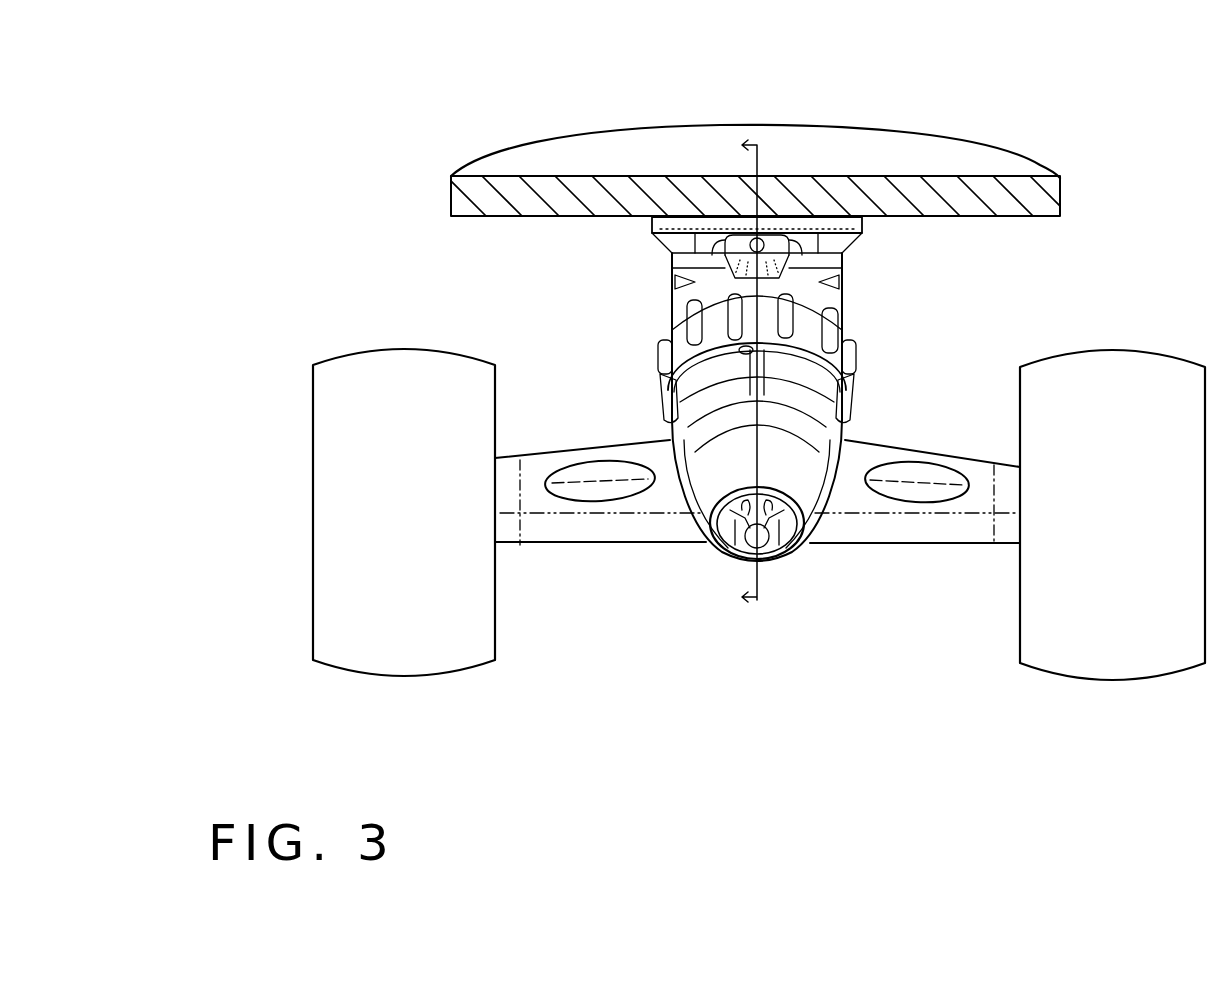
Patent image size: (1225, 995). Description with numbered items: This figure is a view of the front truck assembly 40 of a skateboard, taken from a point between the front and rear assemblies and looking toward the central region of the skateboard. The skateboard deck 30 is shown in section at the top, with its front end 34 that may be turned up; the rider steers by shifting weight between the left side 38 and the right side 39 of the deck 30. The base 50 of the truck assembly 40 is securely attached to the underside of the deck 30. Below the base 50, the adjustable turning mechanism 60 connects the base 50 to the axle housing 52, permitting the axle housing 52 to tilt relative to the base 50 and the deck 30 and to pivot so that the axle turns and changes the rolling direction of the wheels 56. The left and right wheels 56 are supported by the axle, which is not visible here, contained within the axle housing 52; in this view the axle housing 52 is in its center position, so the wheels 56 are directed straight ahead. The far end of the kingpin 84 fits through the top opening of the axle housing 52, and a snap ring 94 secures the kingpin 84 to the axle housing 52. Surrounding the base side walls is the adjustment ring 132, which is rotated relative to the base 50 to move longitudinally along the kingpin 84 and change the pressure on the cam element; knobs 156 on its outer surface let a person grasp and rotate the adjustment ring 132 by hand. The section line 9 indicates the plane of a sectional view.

The section line 9- 9 is at (758, 383).
The skateboard deck 30 is at (797, 157).
The front end of the deck 34 is at (1032, 163).
The left side of the skateboard deck 38 is at (615, 154).
The right side of the skateboard deck 39 is at (983, 165).
The front truck assembly 40 is at (572, 278).
The base 50 is at (858, 243).
The axle housing 52 is at (900, 545).
The wheel 56 is at (1107, 350).
The adjustable turning mechanism 60 is at (904, 386).
The kingpin 84 is at (740, 550).
The snap ring 94 is at (783, 550).
The adjustment ring 132 is at (680, 332).
The knobs 156 is at (660, 356).